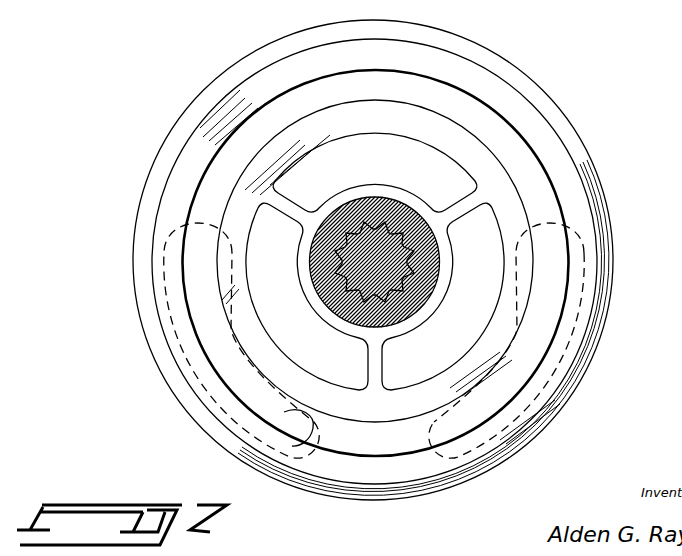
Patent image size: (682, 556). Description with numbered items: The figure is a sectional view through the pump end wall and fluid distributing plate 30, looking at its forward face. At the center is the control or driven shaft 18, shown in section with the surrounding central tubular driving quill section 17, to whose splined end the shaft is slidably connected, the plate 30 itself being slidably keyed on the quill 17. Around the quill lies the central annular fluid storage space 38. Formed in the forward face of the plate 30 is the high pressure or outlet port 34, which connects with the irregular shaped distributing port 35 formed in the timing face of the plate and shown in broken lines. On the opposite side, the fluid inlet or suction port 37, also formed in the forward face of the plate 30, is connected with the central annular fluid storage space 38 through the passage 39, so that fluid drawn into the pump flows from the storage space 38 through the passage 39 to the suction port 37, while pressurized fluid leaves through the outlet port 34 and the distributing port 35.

The pump end wall and fluid distributing plate 30 is at (178, 202).
The central tubular driving quill section 17 is at (383, 196).
The control or driven shaft 18 is at (315, 294).
The central annular fluid storage space 38 is at (467, 255).
The high pressure or outlet port 34 is at (162, 289).
The distributing port 35 is at (284, 412).
The passage 39 is at (518, 232).
The fluid inlet or suction port 37 is at (597, 288).